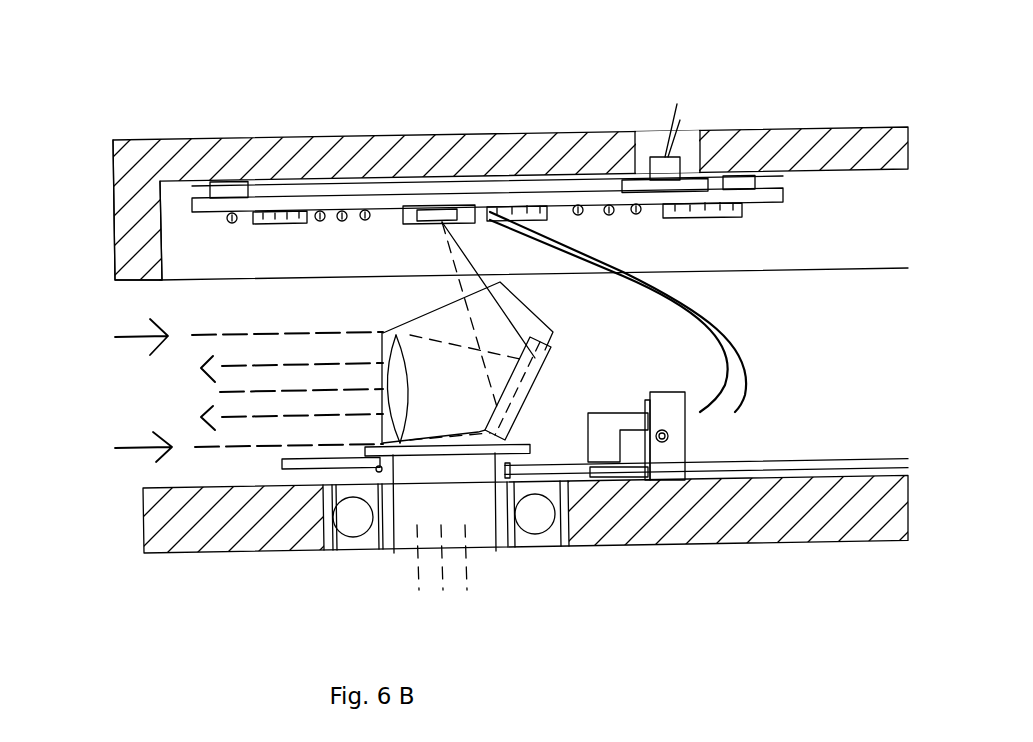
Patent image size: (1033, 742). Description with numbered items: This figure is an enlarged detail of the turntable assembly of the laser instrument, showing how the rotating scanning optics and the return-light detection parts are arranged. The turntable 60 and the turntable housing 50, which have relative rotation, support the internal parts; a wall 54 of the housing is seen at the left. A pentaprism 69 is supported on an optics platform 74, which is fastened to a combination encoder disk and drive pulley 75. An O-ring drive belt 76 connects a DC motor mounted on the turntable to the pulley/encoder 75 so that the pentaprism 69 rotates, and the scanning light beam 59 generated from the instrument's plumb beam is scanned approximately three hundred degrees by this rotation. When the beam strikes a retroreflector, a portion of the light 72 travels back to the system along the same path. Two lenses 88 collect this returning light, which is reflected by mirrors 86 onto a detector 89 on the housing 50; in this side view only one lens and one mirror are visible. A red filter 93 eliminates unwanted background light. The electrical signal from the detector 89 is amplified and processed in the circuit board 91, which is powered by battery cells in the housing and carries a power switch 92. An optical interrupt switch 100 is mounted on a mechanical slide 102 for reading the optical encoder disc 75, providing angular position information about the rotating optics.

The housing 50 is at (113, 140).
The housing wall 54 is at (113, 226).
The scanning beam 59 is at (247, 368).
The turntable 60 is at (143, 531).
The pentaprism 69 is at (424, 318).
The return beam 72 is at (190, 447).
The optics platform 74 is at (367, 443).
The combination encoder disk and drive pulley 75 is at (563, 455).
The O-ring drive belt 76 is at (787, 462).
The mirror 86 is at (442, 224).
The lens 88 is at (383, 333).
The detector 89 is at (442, 220).
The circuit board 91 is at (196, 198).
The power switch 92 is at (677, 104).
The red filter 93 is at (403, 216).
The optical interrupt switch 100 is at (620, 413).
The mechanical slide 102 is at (684, 395).